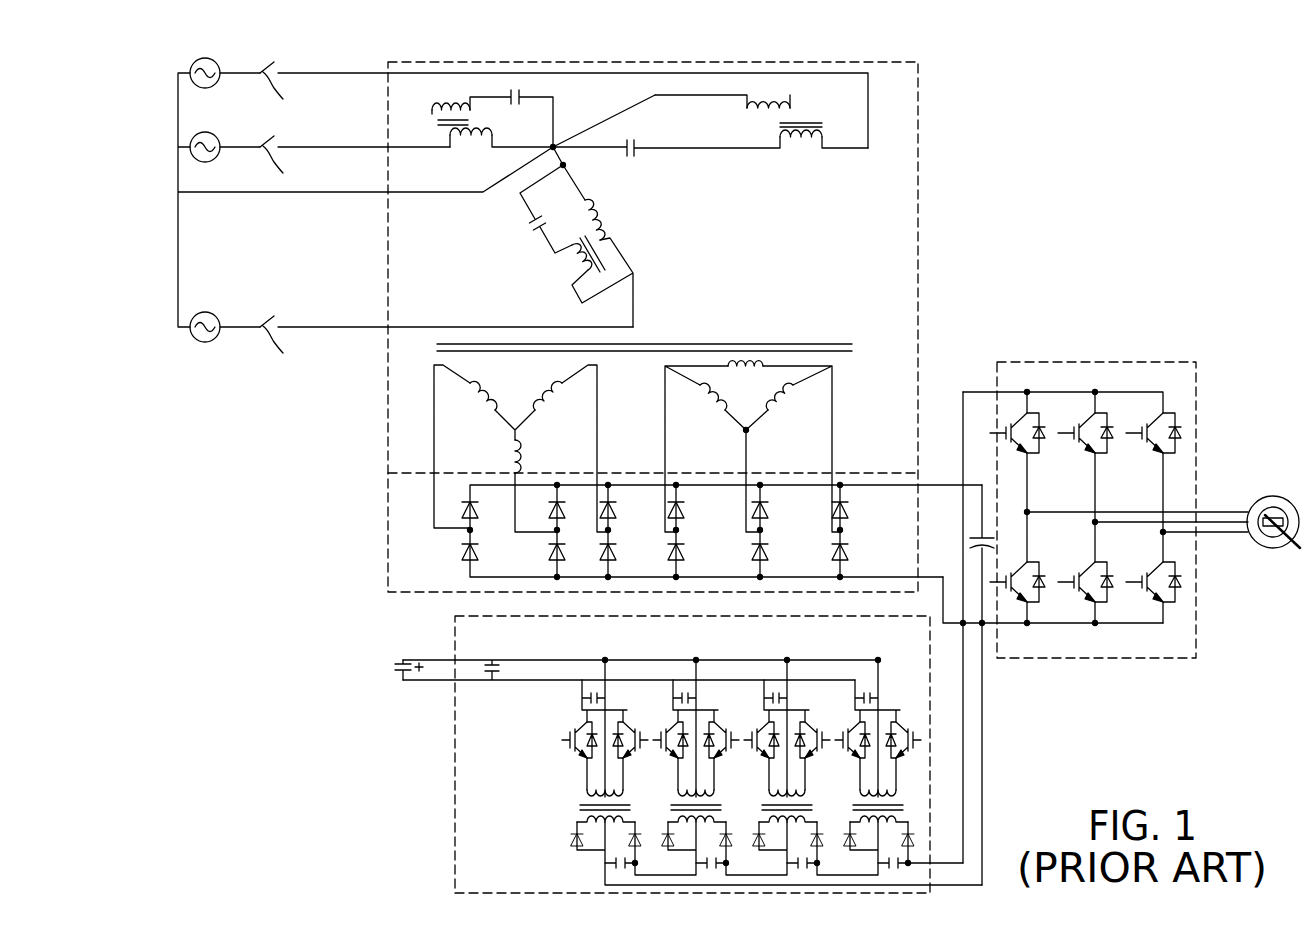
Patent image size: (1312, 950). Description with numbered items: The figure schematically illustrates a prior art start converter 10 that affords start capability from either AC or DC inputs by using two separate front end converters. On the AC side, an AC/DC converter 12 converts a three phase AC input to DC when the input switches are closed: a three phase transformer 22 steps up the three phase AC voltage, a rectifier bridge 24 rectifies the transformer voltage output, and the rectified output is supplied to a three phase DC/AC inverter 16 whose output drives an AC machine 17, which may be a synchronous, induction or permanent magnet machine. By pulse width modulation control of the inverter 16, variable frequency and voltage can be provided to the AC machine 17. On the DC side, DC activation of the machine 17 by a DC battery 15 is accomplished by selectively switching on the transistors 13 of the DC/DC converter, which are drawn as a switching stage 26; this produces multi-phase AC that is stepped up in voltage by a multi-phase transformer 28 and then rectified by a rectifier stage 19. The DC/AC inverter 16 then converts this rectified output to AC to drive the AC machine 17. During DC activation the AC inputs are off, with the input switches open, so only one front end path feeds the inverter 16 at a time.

The start converter 10 is at (739, 466).
The AC/DC converter 12 is at (918, 150).
The transistors 13 is at (633, 728).
The DC battery 15 is at (406, 673).
The three phase DC/AC inverter 16 is at (1132, 362).
The AC machine 17 is at (1254, 505).
The rectifier stage 19 is at (565, 828).
The three phase transformer 22 is at (423, 462).
The rectifier bridge 24 is at (423, 506).
The IGBT switching stage 26 is at (726, 728).
The multi-phase transformer 28 is at (560, 790).